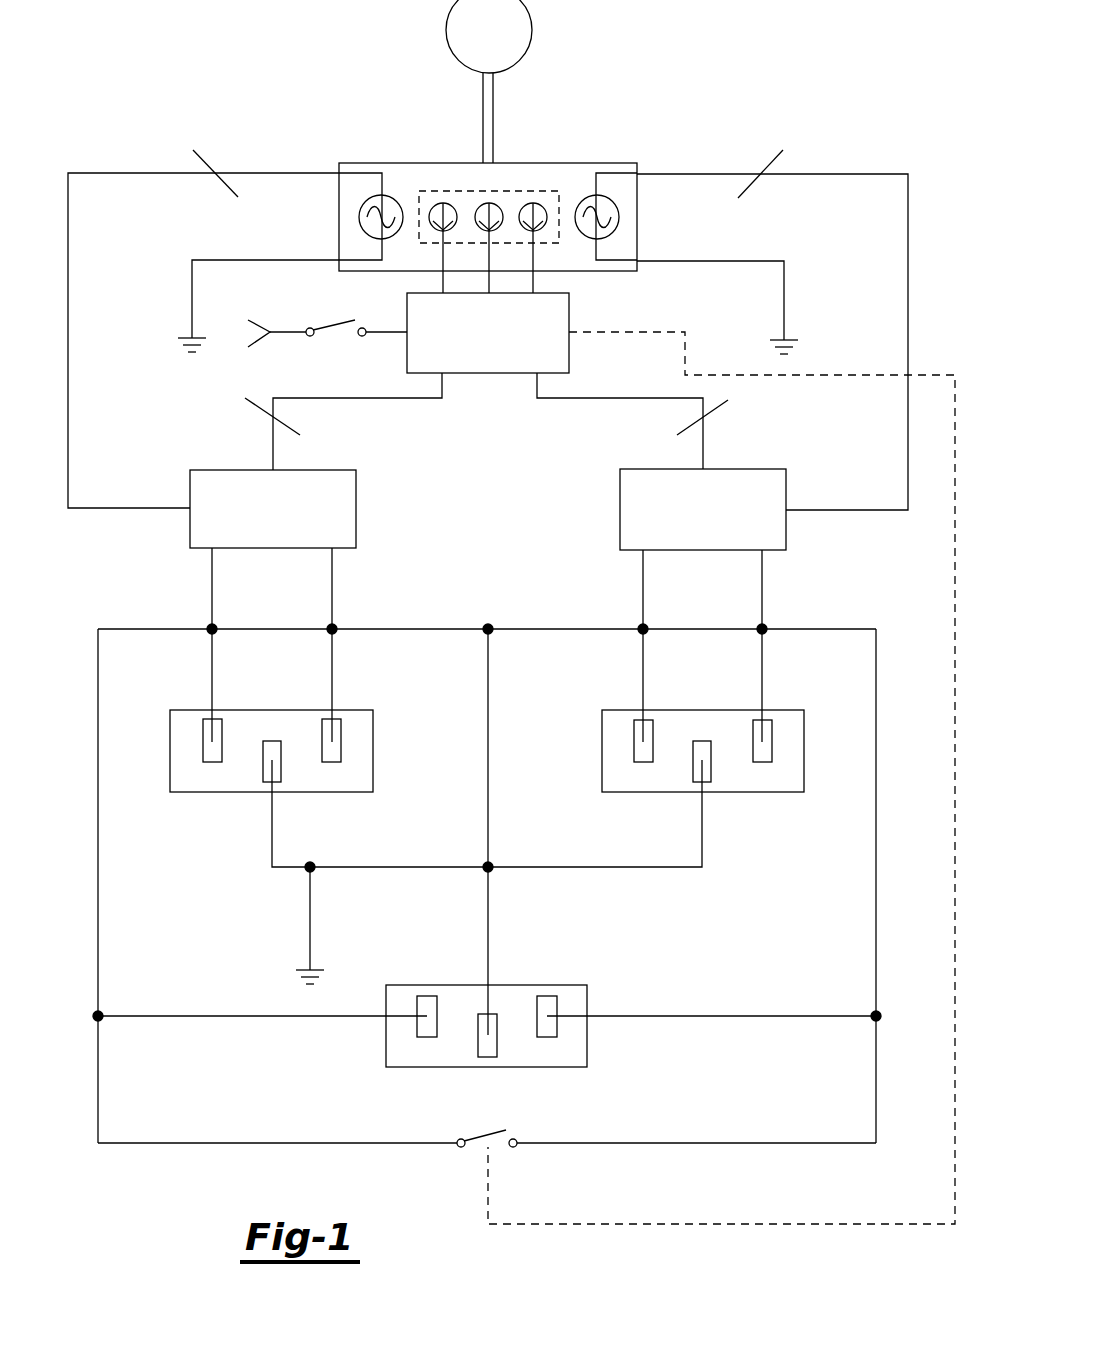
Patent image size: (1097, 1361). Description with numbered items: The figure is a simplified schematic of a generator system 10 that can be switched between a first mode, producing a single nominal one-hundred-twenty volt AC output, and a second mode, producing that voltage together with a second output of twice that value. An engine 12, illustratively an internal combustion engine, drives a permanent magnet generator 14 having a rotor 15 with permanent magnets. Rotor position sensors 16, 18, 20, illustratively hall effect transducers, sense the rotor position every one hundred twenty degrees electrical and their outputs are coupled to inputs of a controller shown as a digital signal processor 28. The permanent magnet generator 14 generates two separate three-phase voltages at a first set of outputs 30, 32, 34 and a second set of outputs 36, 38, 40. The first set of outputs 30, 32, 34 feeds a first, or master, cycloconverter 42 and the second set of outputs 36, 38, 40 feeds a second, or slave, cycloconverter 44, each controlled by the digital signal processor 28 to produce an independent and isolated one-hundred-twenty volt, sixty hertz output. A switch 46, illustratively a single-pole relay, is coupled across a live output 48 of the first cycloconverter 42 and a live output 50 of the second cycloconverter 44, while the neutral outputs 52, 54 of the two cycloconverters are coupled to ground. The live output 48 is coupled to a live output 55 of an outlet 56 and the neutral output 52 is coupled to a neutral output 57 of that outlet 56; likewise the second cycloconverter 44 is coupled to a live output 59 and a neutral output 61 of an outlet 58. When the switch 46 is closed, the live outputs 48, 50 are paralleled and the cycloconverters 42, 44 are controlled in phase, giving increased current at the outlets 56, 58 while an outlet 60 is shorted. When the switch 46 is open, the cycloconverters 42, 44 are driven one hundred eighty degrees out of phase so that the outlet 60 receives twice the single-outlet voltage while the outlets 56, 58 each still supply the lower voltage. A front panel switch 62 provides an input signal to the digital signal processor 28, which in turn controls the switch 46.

The generator system 10 is at (115, 97).
The engine 12 is at (530, 13).
The permanent magnet generator 14 is at (584, 163).
The rotor 15 is at (512, 191).
The rotor position sensor 16 is at (432, 203).
The rotor position sensor 18 is at (478, 203).
The rotor position sensor 20 is at (543, 205).
The digital signal processor 28 is at (569, 315).
The first set output 30 is at (208, 165).
The first set output 32 is at (203, 329).
The first set output 34 is at (203, 329).
The second set output 36 is at (768, 163).
The second set output 38 is at (772, 330).
The second set output 40 is at (772, 330).
The first cycloconverter 42 is at (208, 470).
The second cycloconverter 44 is at (767, 469).
The switch 46 is at (488, 1137).
The live output 48 is at (212, 550).
The live output 50 is at (762, 552).
The neutral output 52 is at (332, 550).
The neutral output 54 is at (643, 552).
The live output 55 is at (207, 757).
The outlet 56 is at (254, 760).
The neutral output 57 is at (335, 758).
The outlet 58 is at (687, 761).
The live output 59 is at (640, 757).
The outlet 60 is at (564, 985).
The neutral output 61 is at (762, 757).
The switch 62 is at (306, 328).